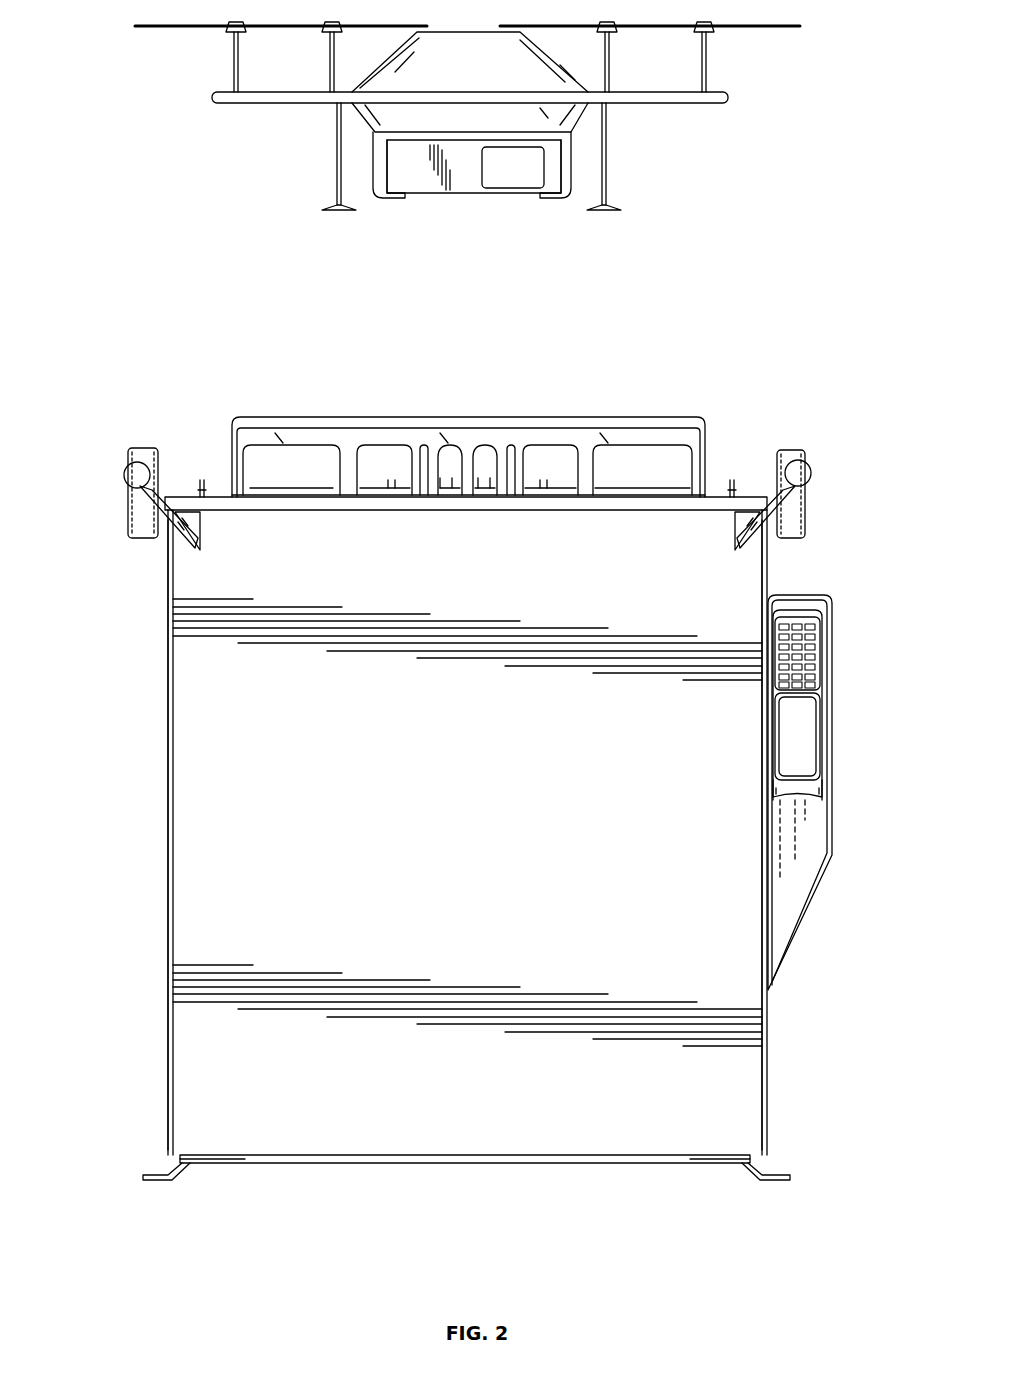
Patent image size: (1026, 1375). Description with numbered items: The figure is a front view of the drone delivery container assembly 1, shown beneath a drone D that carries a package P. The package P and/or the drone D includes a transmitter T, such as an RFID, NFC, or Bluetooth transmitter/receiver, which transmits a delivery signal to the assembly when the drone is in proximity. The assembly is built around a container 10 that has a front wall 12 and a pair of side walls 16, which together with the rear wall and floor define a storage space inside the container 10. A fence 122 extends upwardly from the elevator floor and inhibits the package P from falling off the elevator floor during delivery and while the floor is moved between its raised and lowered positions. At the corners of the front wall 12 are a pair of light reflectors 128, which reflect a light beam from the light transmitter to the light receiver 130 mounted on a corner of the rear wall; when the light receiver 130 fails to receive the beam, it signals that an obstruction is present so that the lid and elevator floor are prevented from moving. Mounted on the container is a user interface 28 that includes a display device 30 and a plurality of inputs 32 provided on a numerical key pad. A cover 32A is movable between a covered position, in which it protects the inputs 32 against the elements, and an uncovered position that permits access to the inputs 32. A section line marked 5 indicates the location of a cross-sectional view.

The drone delivery container assembly 1 is at (687, 297).
The drone D is at (632, 103).
The package P is at (418, 172).
The transmitter T is at (500, 172).
The section line 5 is at (467, 410).
The container 10 is at (820, 1037).
The front wall 12 is at (190, 858).
The side walls 16 is at (168, 720).
The user interface 28 is at (835, 688).
The display device 30 is at (800, 605).
The inputs 32 is at (797, 624).
The cover 32A is at (800, 733).
The fence 122 is at (233, 430).
The light reflectors 128 is at (125, 473).
The light receiver 130 is at (128, 538).